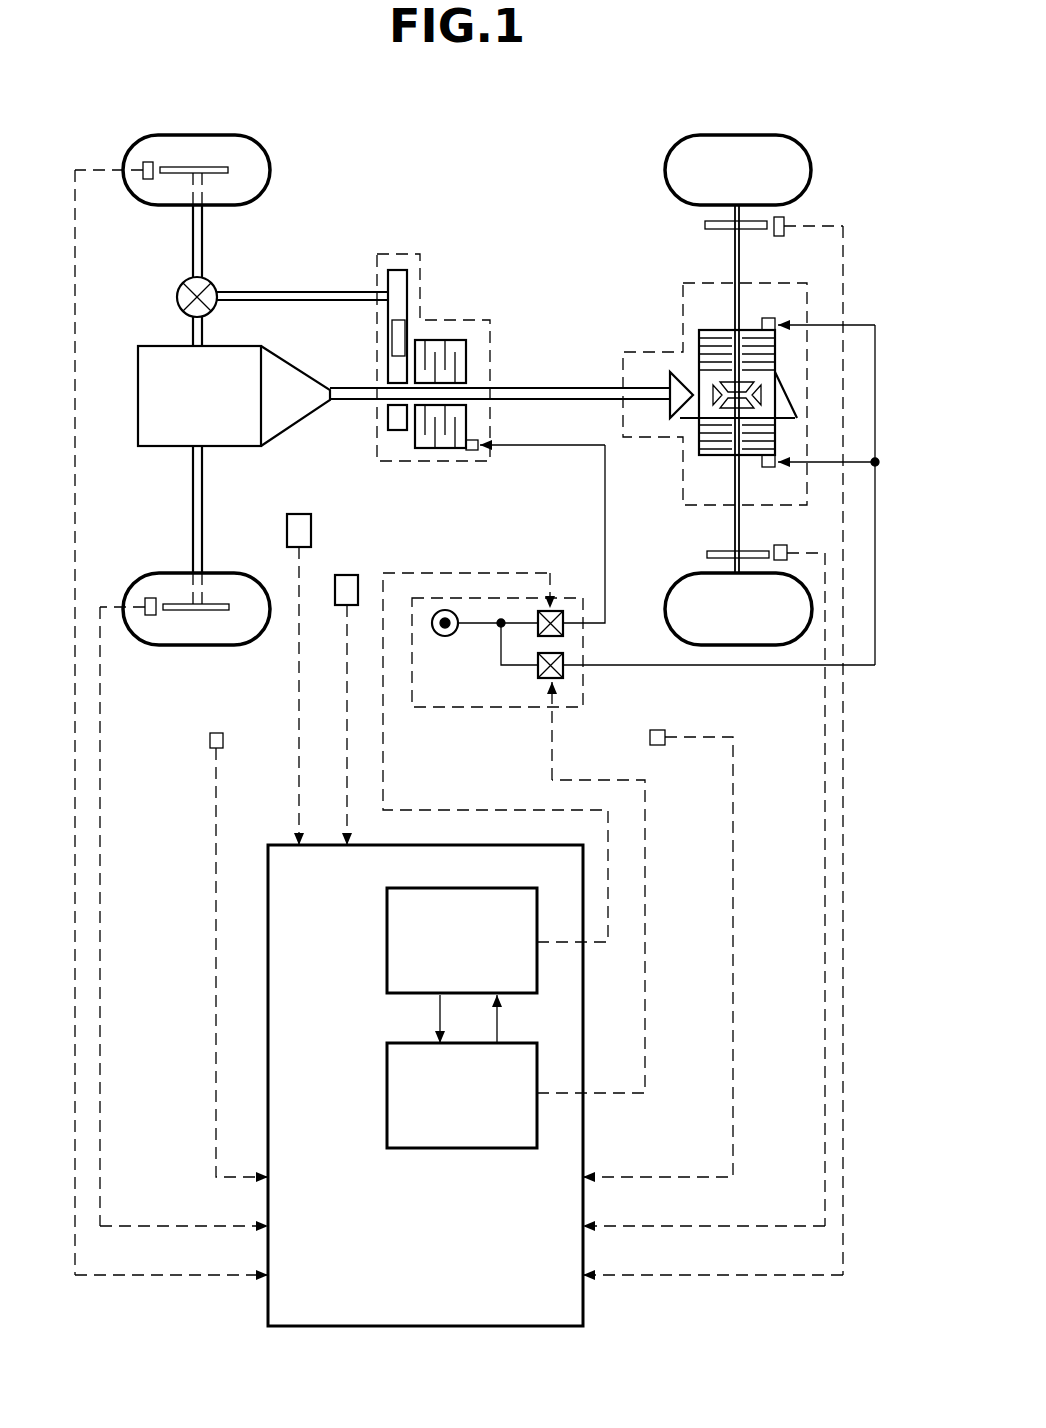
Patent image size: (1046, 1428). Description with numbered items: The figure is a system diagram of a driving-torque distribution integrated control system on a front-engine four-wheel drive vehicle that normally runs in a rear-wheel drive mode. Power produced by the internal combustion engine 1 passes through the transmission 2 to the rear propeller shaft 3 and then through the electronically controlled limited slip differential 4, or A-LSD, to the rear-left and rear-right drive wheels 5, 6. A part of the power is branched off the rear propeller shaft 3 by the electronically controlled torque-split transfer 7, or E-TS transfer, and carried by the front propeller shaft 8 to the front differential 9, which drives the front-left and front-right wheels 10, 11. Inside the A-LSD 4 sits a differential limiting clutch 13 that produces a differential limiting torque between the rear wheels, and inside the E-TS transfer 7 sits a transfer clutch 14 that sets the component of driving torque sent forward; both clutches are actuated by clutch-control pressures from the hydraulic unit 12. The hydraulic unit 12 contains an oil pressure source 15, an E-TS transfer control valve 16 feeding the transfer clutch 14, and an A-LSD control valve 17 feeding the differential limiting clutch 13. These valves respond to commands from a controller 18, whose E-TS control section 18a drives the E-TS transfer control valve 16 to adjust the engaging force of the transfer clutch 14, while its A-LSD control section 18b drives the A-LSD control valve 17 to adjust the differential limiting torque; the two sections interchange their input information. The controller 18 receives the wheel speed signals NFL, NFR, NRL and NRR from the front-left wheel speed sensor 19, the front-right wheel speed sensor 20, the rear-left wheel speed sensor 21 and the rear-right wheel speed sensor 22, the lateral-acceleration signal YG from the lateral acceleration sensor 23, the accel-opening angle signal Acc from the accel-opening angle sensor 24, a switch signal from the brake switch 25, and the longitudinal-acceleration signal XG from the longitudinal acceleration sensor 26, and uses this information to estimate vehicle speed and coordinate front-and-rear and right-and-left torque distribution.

The internal combustion engine 1 is at (240, 425).
The transmission 2 is at (304, 404).
The rear propeller shaft 3 is at (550, 387).
The electronically controlled limited slip differential (A-LSD) 4 is at (683, 283).
The rear-left drive wheel 5 is at (667, 608).
The rear-right drive wheel 6 is at (702, 135).
The electronically controlled torque-split transfer (E-TS transfer) 7 is at (377, 254).
The front propeller shaft 8 is at (282, 291).
The front differential 9 is at (177, 291).
The front-left wheel 10 is at (210, 645).
The front-right wheel 11 is at (226, 135).
The hydraulic unit 12 is at (560, 598).
The differential limiting clutch 13 is at (786, 440).
The transfer clutch 14 is at (468, 350).
The oil pressure source 15 is at (440, 636).
The E-TS transfer control valve 16 is at (565, 630).
The A-LSD control valve 17 is at (538, 672).
The controller 18 is at (585, 1140).
The E-TS control section 18a is at (466, 888).
The A-LSD control section 18b is at (468, 1148).
The front-left wheel speed sensor 19 is at (150, 598).
The front-right wheel speed sensor 20 is at (149, 180).
The rear-left wheel speed sensor 21 is at (787, 548).
The rear-right wheel speed sensor 22 is at (784, 230).
The lateral acceleration sensor 23 is at (347, 575).
The accel-opening angle sensor 24 is at (220, 733).
The brake switch 25 is at (657, 730).
The longitudinal acceleration sensor 26 is at (300, 514).